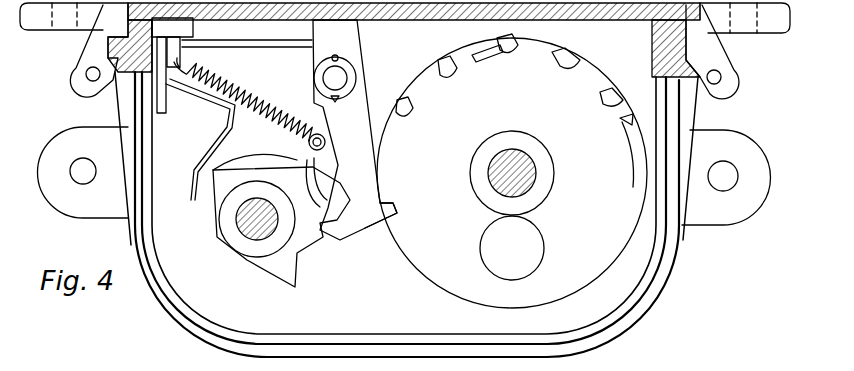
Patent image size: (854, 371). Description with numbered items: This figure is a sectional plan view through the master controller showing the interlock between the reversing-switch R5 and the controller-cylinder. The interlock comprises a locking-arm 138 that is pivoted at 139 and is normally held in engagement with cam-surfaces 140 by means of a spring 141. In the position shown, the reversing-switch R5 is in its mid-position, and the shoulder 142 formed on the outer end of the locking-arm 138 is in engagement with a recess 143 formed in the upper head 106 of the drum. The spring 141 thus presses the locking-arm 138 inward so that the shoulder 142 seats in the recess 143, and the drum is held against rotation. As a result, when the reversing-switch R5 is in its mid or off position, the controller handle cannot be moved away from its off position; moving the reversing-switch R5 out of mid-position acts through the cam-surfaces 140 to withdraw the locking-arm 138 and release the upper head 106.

The upper head 106 is at (453, 266).
The locking-arm 138 is at (343, 117).
The pivot 139 is at (345, 78).
The cam-surfaces 140 is at (311, 243).
The spring 141 is at (243, 96).
The shoulder 142 is at (393, 228).
The recess 143 is at (416, 192).
The reversing-switch R5 is at (217, 219).